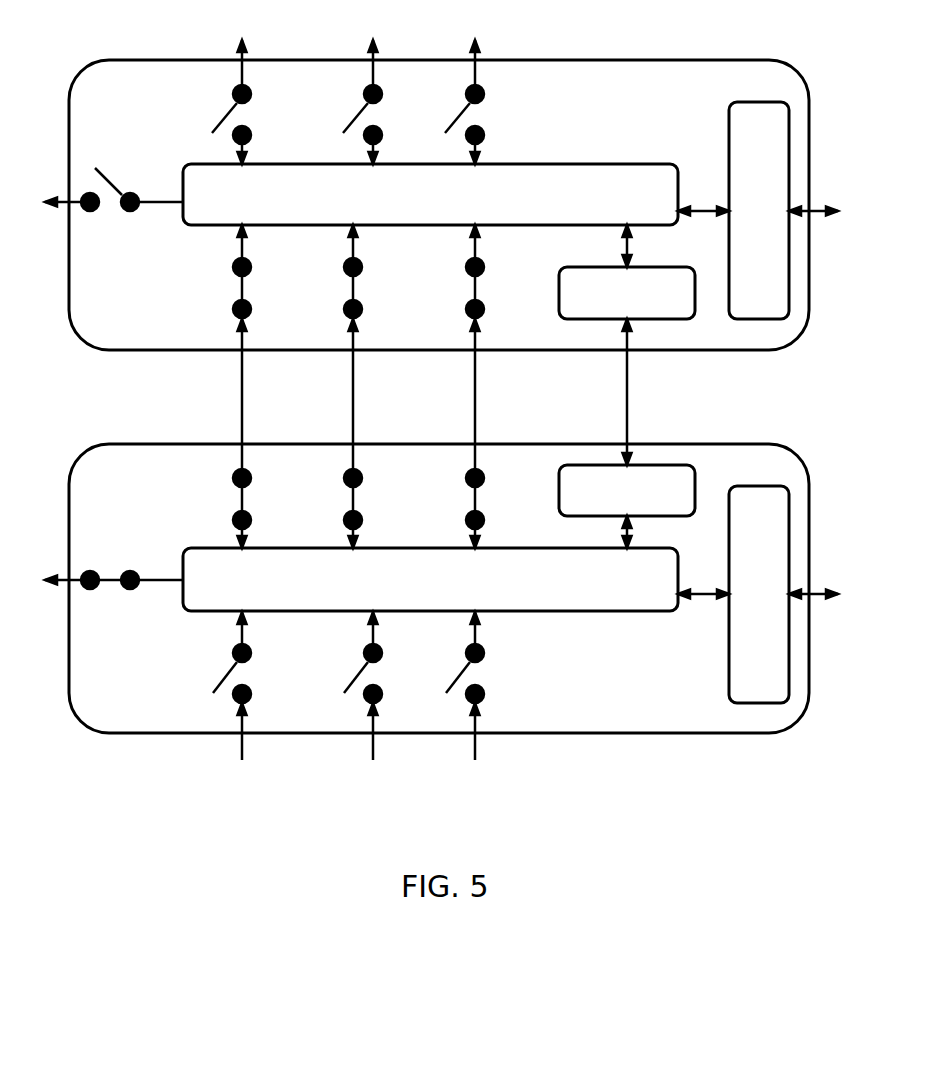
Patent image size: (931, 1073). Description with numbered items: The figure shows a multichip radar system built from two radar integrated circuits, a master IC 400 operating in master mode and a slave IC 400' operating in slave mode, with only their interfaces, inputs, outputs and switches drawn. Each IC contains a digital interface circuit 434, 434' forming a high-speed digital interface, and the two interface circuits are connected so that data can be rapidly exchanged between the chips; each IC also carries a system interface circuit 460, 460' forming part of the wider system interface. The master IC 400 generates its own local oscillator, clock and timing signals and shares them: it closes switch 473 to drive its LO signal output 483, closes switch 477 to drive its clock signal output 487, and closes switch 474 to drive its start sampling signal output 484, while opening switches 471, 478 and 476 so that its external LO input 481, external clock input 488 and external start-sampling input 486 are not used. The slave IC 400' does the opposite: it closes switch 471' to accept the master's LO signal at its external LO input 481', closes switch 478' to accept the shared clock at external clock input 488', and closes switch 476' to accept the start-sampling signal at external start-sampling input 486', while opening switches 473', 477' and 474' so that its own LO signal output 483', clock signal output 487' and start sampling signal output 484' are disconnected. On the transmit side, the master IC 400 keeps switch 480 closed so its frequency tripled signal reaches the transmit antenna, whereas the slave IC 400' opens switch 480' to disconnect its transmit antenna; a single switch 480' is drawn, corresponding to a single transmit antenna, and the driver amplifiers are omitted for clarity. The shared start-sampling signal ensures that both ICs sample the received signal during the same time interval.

The radar IC 400 is at (439, 588).
The slave radar IC 400' is at (439, 205).
The digital interface circuit 434 is at (627, 500).
The digital interface circuit 434' is at (627, 345).
The system interface circuit 460 is at (758, 594).
The system interface circuit 460' is at (758, 210).
The switch 471 is at (202, 657).
The switch 471' is at (209, 287).
The switch 473 is at (210, 508).
The switch 473' is at (200, 124).
The switch 474 is at (443, 508).
The switch 474' is at (437, 124).
The switch 476 is at (438, 657).
The switch 476' is at (438, 287).
The switch 477 is at (322, 508).
The switch 477' is at (332, 124).
The switch 478 is at (333, 657).
The switch 478' is at (320, 287).
The switch 480 is at (114, 559).
The switch 480' is at (114, 177).
The external LO input 481 is at (217, 736).
The external LO input 481' is at (216, 375).
The LO signal output 483 is at (267, 439).
The LO signal output 483' is at (271, 61).
The start sampling signal output 484 is at (499, 439).
The start sampling signal output 484' is at (503, 61).
The external start-sampling input 486 is at (498, 737).
The external start-sampling input 486' is at (502, 375).
The clock signal output 487 is at (379, 439).
The clock signal output 487' is at (402, 61).
The external clock input 488 is at (396, 737).
The external clock input 488' is at (382, 375).